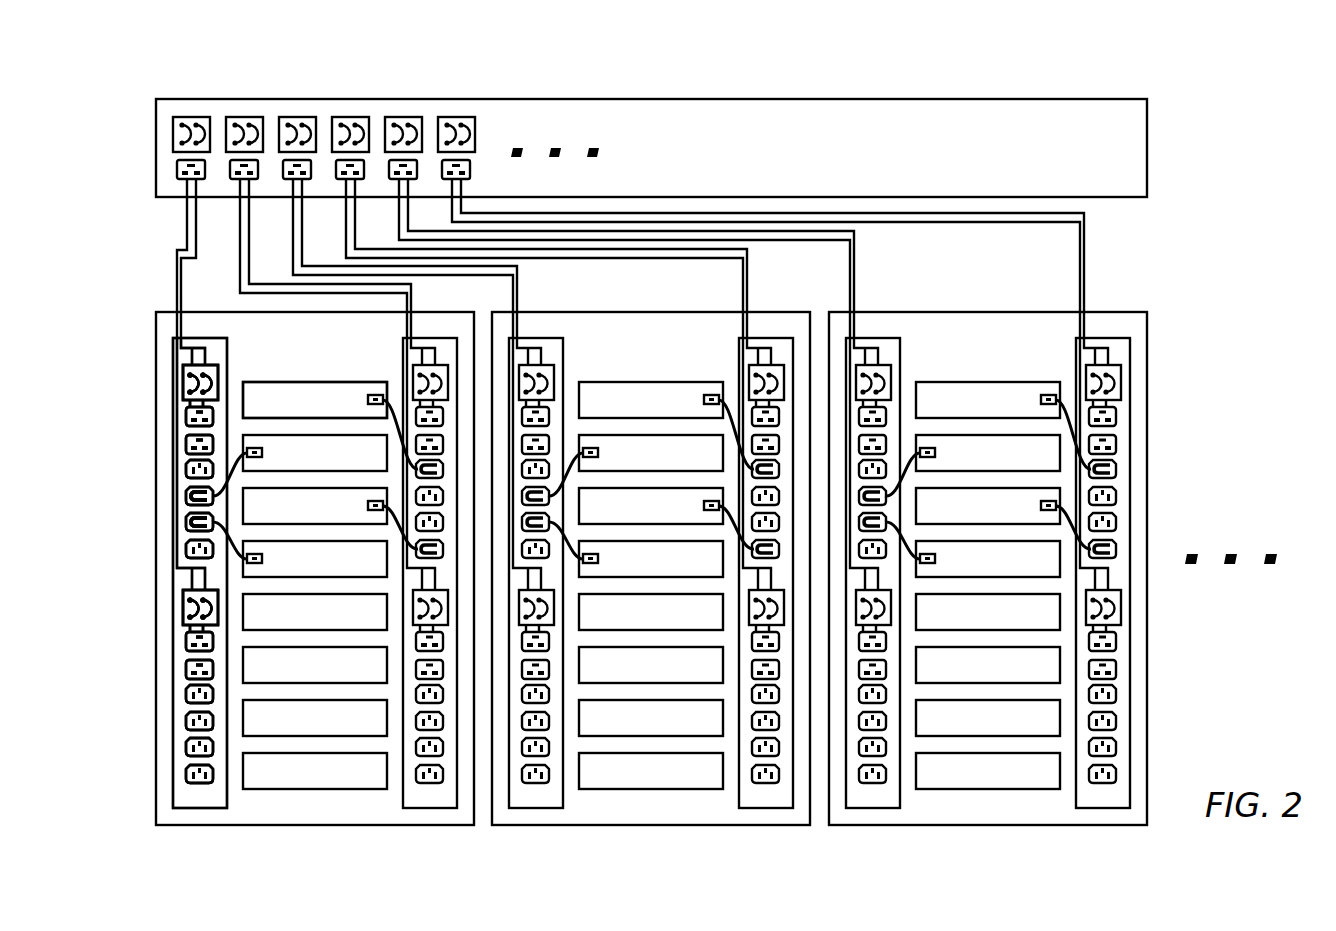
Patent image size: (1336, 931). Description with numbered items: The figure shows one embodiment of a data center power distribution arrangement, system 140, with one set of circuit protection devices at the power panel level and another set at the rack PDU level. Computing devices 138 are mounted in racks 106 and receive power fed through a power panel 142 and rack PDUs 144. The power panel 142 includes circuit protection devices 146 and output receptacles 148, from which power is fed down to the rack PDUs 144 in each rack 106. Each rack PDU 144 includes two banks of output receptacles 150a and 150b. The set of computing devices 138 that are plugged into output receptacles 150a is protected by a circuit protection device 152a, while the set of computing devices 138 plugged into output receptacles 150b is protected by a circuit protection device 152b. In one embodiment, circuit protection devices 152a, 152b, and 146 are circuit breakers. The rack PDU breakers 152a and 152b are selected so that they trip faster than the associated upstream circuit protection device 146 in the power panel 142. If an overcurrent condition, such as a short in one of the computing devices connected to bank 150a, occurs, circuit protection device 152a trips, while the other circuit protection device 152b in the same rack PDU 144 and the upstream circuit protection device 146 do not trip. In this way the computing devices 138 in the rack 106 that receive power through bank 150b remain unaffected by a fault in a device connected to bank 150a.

The system 140 is at (1224, 95).
The power panel 142 is at (1119, 178).
The circuit protection device 146 is at (182, 170).
The output receptacle 148 is at (183, 131).
The rack 106 is at (366, 358).
The computing device 138 is at (353, 411).
The rack PDU 144 is at (218, 352).
The bank of output receptacles 150a is at (166, 475).
The bank of output receptacles 150b is at (166, 700).
The circuit protection device 152a is at (182, 378).
The circuit protection device 152b is at (182, 604).